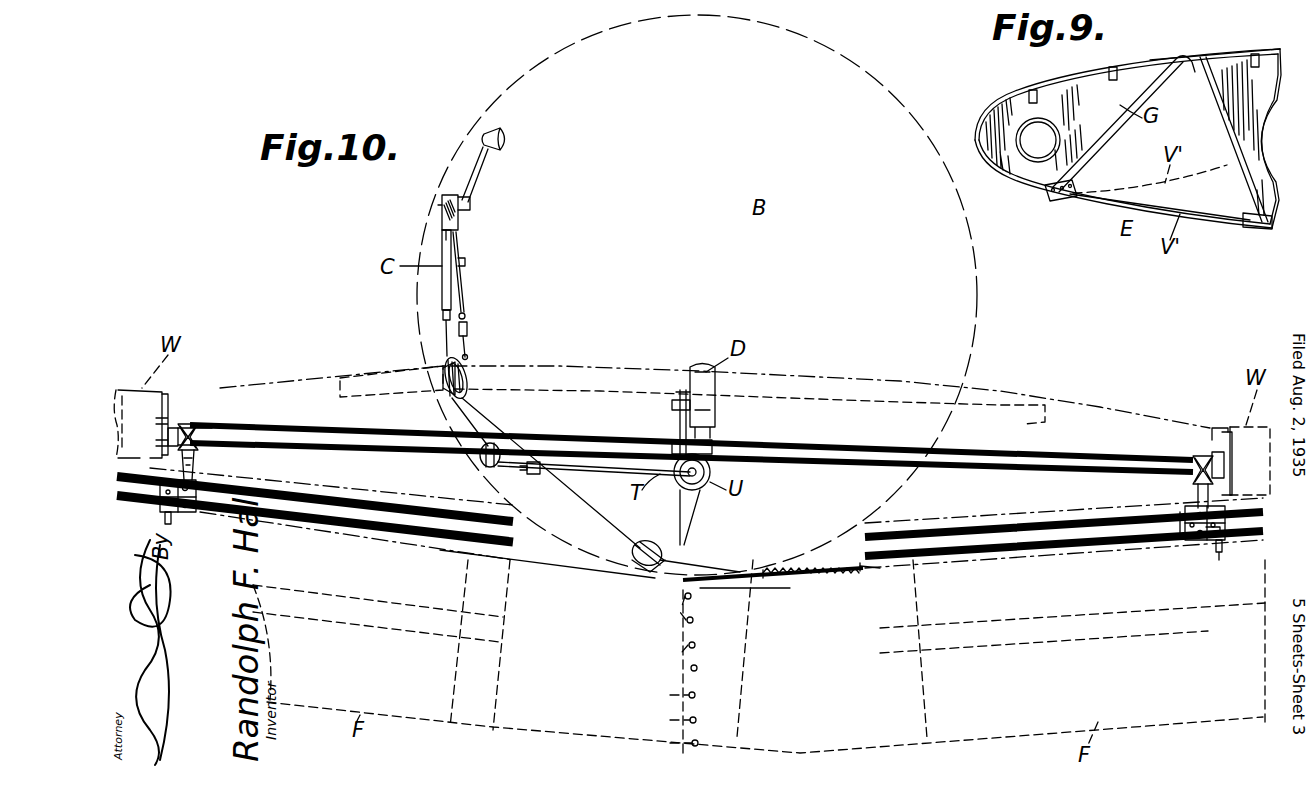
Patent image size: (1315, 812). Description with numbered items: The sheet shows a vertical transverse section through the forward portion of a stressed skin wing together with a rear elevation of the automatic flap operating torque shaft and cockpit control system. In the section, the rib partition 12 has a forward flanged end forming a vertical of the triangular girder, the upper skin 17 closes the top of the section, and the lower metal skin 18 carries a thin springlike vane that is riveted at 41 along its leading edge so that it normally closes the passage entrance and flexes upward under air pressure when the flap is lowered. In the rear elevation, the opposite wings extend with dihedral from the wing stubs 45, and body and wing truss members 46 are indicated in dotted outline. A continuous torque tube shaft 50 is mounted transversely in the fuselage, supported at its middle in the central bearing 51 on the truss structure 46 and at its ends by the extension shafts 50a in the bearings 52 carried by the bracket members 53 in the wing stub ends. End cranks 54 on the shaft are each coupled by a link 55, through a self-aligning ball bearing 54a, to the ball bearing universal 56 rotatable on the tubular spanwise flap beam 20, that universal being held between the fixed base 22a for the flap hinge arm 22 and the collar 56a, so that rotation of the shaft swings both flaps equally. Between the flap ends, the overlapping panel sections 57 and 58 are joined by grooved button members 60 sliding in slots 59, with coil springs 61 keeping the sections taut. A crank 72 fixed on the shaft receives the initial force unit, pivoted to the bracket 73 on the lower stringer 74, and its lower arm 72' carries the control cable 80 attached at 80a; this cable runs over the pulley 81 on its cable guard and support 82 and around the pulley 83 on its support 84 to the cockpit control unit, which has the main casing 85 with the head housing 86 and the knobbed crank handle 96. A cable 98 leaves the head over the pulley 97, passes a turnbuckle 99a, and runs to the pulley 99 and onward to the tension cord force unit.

In FIG. 9, the rib partition 12 is at (1012, 100).
In FIG. 9, the top skin flange 17 is at (1228, 52).
In FIG. 9, the lower metal skin 18 is at (1052, 199).
In FIG. 9, the rivet attachment of vane 41 is at (1065, 192).
In FIG. 10, the tubular spanwise flap beam 20 is at (360, 506).
In FIG. 10, the flap hinge arm 22 is at (1221, 552).
In FIG. 10, the fixed base for flap hinge arm 22a is at (1222, 528).
In FIG. 10, the wing stub 45 is at (266, 385).
In FIG. 10, the body and wing truss members 46 is at (655, 392).
In FIG. 10, the torque tube shaft 50 is at (272, 432).
In FIG. 10, the extension shaft 50a is at (186, 428).
In FIG. 10, the central bearing 51 is at (716, 434).
In FIG. 10, the end bearing 52 is at (172, 430).
In FIG. 10, the rib or bracket member 53 is at (166, 393).
In FIG. 10, the end crank 54 is at (192, 426).
In FIG. 10, the self-aligning ball bearing 54a is at (200, 427).
In FIG. 10, the link 55 is at (196, 452).
In FIG. 10, the ball bearing universal 56 is at (1197, 542).
In FIG. 10, the collar 56a is at (1180, 528).
In FIG. 10, the left-hand panel section 57 is at (470, 553).
In FIG. 10, the right-hand panel section 58 is at (778, 584).
In FIG. 10, the slot 59 is at (684, 664).
In FIG. 10, the grooved button member 60 is at (682, 578).
In FIG. 10, the coil spring 61 is at (800, 568).
In FIG. 10, the crank 72 is at (738, 436).
In FIG. 10, the lower crank arm 72' is at (714, 517).
In FIG. 10, the fitting or bracket member 73 is at (683, 392).
In FIG. 10, the lower stringer 74 is at (676, 402).
In FIG. 10, the control cable 80 is at (444, 330).
In FIG. 10, the cable attachment 80a is at (700, 558).
In FIG. 10, the pulley 81 is at (640, 546).
In FIG. 10, the combined cable guard and support 82 is at (648, 570).
In FIG. 10, the pulley 83 is at (470, 372).
In FIG. 10, the combined cable guard and support 84 is at (448, 384).
In FIG. 10, the main casing or housing 85 is at (460, 240).
In FIG. 10, the head forming housing 86 is at (454, 192).
In FIG. 10, the knobbed operating crank handle 96 is at (478, 180).
In FIG. 10, the pulley 97 is at (442, 203).
In FIG. 10, the cable 98 is at (446, 232).
In FIG. 10, the pulley 99 is at (484, 464).
In FIG. 10, the turnbuckle 99a is at (470, 330).